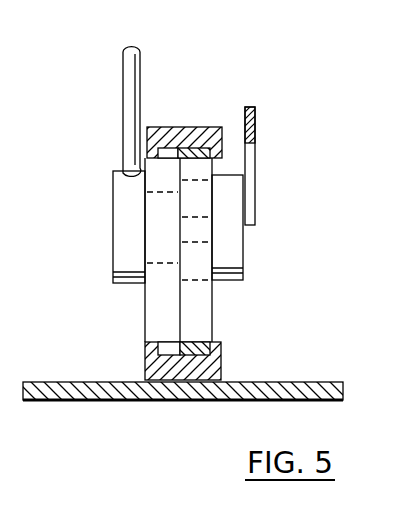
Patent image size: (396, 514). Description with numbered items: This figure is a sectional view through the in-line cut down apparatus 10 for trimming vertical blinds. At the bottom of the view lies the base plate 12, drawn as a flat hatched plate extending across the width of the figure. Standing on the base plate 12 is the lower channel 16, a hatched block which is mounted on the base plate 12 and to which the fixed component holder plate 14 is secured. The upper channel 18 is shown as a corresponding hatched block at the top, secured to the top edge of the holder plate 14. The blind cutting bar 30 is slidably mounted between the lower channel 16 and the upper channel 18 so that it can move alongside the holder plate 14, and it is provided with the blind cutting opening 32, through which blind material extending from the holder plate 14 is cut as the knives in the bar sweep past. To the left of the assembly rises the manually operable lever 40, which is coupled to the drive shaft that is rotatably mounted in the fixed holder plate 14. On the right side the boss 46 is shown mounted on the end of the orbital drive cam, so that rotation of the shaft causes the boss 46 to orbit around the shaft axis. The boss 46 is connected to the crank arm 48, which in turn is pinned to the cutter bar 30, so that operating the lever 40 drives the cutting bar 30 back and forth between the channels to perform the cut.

The in-line cut down apparatus 10 is at (288, 167).
The base plate 12 is at (333, 382).
The fixed component holder plate 14 is at (158, 310).
The lower channel 16 is at (147, 367).
The upper channel 18 is at (183, 127).
The blind cutting bar 30 is at (197, 342).
The blind cutting opening 32 is at (190, 305).
The manually operable lever 40 is at (125, 100).
The boss 46 is at (231, 184).
The crank arm 48 is at (256, 128).